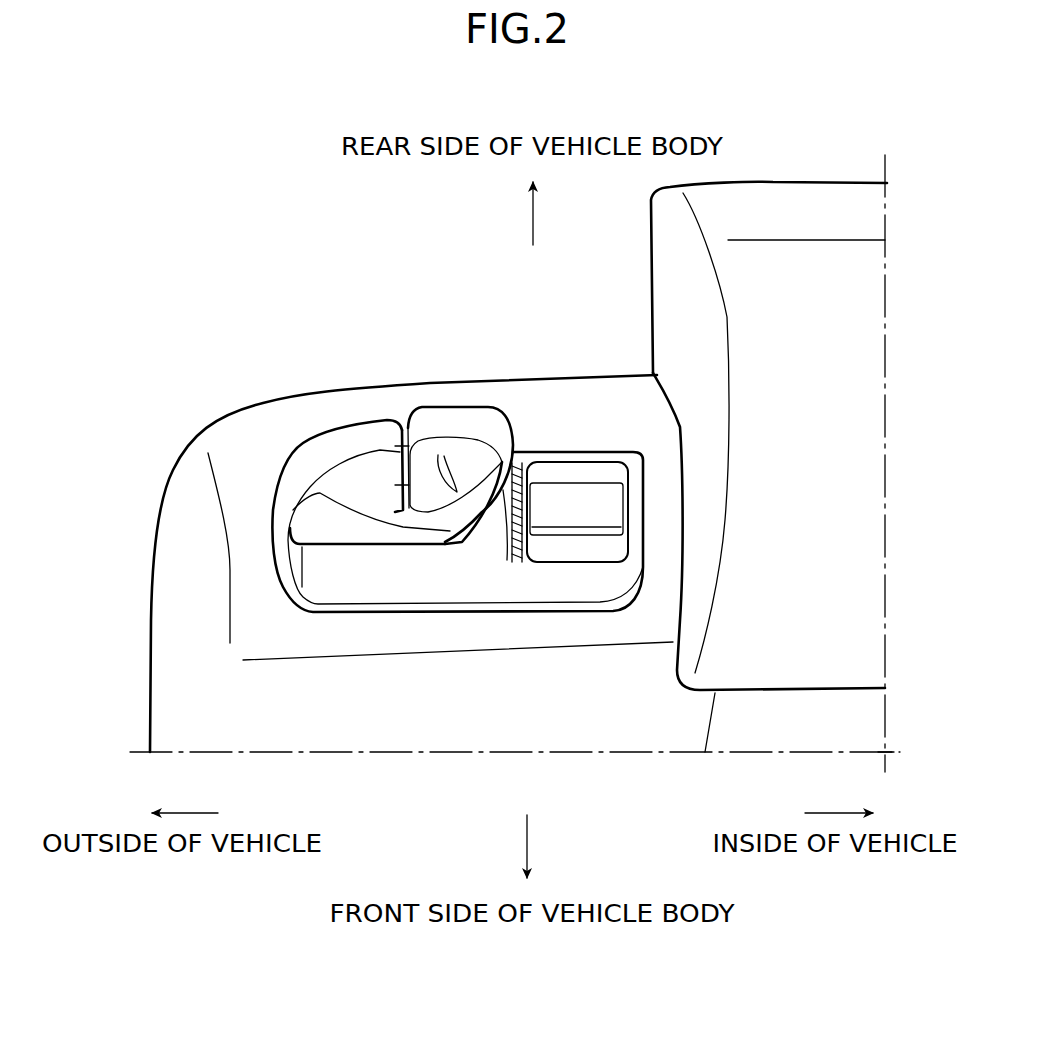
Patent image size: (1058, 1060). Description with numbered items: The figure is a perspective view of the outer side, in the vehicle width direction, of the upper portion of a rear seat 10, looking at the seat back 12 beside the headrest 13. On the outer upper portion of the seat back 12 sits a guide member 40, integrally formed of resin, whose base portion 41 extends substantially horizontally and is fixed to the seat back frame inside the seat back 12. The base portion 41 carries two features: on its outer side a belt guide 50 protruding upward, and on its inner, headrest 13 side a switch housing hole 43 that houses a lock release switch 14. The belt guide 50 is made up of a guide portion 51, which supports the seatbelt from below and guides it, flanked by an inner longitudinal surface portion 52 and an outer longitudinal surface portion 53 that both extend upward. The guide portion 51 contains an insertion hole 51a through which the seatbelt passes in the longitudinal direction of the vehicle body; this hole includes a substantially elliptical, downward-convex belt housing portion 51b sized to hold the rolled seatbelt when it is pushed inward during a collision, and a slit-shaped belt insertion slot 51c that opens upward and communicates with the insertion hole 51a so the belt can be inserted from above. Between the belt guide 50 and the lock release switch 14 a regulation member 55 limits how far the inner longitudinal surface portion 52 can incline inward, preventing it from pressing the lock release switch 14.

The rear seat 10 is at (800, 170).
The seat back 12 is at (173, 468).
The headrest 13 is at (862, 596).
The lock release switch 14 is at (577, 497).
The guide member 40 is at (270, 603).
The base portion 41 is at (373, 590).
The switch housing hole 43 is at (610, 480).
The belt guide 50 is at (355, 501).
The guide portion 51 is at (336, 517).
The insertion hole 51a is at (390, 519).
The belt housing portion 51b is at (468, 458).
The belt insertion slot 51c is at (403, 470).
The inner longitudinal surface portion 52 is at (481, 523).
The outer longitudinal surface portion 53 is at (273, 543).
The regulation member 55 is at (512, 535).